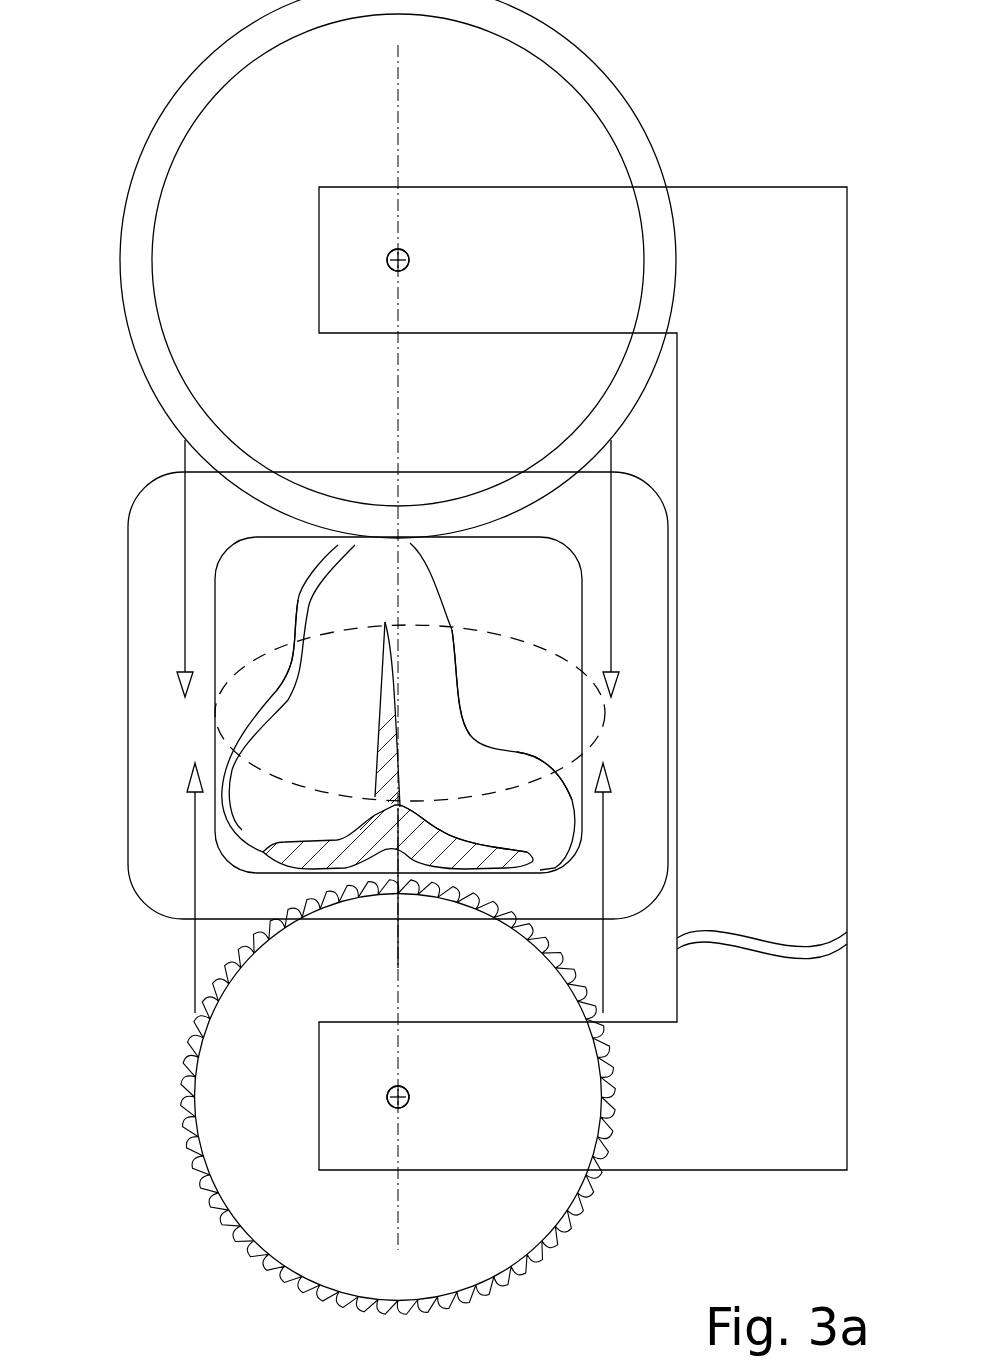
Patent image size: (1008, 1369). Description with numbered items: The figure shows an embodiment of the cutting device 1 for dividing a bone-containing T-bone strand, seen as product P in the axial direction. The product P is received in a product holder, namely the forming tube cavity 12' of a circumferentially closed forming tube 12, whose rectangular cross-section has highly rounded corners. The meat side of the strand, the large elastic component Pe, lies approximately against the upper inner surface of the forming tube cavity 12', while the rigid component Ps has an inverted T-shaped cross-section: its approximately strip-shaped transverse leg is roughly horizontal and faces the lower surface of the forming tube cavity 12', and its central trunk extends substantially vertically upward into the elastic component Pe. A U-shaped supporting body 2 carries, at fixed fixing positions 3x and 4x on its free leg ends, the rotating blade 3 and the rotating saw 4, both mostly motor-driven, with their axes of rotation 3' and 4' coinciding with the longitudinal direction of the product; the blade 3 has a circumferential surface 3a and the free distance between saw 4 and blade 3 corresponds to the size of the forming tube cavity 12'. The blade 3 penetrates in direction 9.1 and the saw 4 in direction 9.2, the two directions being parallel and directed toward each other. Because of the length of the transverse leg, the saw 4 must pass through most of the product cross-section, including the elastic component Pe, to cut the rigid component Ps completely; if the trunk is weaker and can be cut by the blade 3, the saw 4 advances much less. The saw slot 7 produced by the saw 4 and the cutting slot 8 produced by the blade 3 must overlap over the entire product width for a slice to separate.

The cutting device 1 is at (452, 657).
The supporting body 2 is at (583, 678).
The blade 3 is at (367, 269).
The roller surface 3a is at (125, 207).
The axis of rotation of the blade 3' is at (452, 249).
The fixing position of the blade 3x is at (398, 260).
The saw 4 is at (340, 1097).
The axis of rotation of the saw 4' is at (452, 1077).
The fixing position of the saw 4x is at (398, 1097).
The saw slot 7 is at (512, 658).
The cutting slot 8 is at (562, 745).
The direction of penetration of the blade 9.1 is at (185, 553).
The direction of penetration of the saw 9.2 is at (195, 835).
The forming tube 12 is at (373, 726).
The forming tube cavity 12' is at (398, 705).
The product P is at (283, 612).
The elastic component Pe is at (373, 684).
The rigid component Ps is at (460, 847).